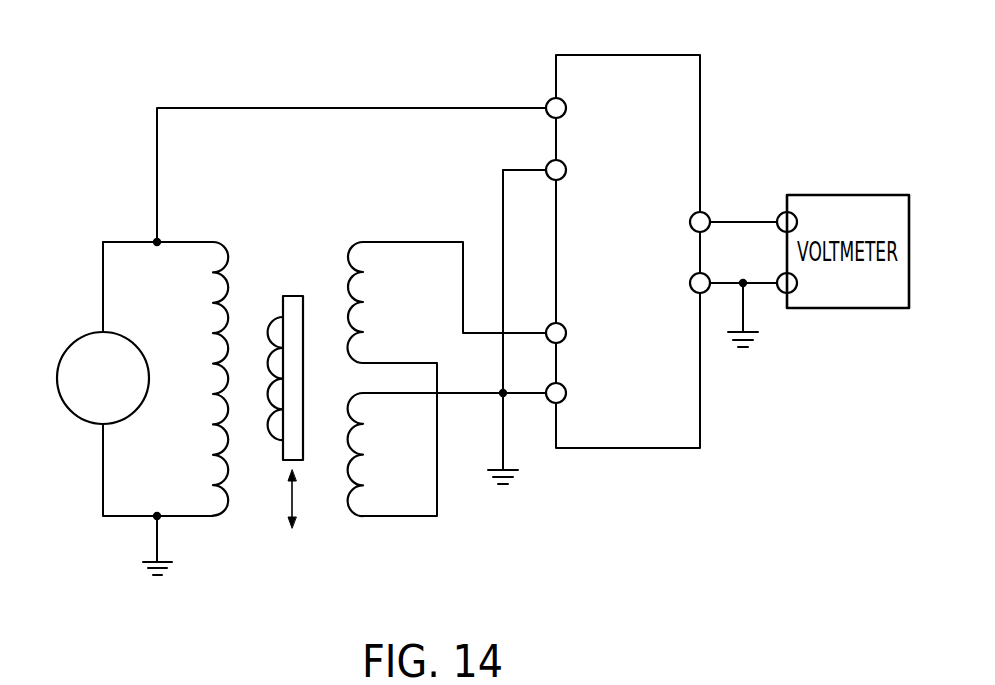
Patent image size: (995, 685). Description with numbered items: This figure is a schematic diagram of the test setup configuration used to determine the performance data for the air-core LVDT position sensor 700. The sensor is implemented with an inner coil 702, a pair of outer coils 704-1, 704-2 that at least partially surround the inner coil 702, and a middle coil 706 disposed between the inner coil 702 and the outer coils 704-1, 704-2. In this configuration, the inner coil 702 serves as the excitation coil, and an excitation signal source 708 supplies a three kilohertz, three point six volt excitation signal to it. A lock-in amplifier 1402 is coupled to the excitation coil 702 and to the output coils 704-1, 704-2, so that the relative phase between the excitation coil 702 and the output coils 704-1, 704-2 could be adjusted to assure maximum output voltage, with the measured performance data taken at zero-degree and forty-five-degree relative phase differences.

The air-core LVDT position sensor variation 700 is at (291, 240).
The inner coil 702 is at (213, 242).
The first outer coil 704-1 is at (364, 242).
The second outer coil 704-2 is at (365, 518).
The middle coil 706 is at (285, 463).
The excitation signal source 708 is at (77, 343).
The lock-in amplifier 1402 is at (645, 55).